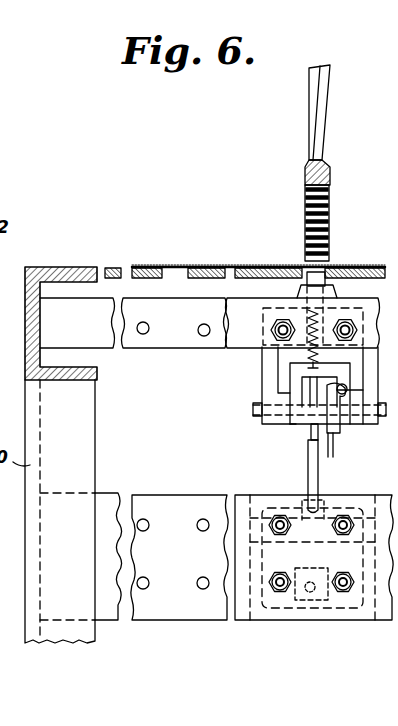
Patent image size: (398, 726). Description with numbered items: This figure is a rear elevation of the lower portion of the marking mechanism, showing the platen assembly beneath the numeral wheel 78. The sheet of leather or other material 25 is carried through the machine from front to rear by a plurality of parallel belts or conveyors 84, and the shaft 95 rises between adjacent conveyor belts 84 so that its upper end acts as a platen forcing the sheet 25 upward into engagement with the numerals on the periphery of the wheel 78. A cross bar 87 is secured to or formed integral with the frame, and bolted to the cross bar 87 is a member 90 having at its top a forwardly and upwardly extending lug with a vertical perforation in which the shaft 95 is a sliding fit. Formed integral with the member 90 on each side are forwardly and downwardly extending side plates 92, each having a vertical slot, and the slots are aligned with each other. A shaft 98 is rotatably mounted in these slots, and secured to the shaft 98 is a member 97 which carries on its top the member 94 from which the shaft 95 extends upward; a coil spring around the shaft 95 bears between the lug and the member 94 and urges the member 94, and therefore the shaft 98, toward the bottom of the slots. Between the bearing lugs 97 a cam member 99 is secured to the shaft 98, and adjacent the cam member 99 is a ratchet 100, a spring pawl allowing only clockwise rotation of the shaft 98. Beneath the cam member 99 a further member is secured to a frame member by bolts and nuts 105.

The sheet of leather or other material 25 is at (245, 265).
The wheel 78 is at (312, 142).
The belts or conveyors 84 is at (195, 268).
The cross bar 87 is at (173, 270).
The member 90 is at (384, 319).
The side plates 92 is at (265, 391).
The member 94 is at (305, 368).
The shaft 95 is at (318, 279).
The member 97 is at (291, 424).
The shaft 98 is at (255, 415).
The cam member 99 is at (312, 428).
The ratchet 100 is at (330, 435).
The nuts 105 is at (270, 580).